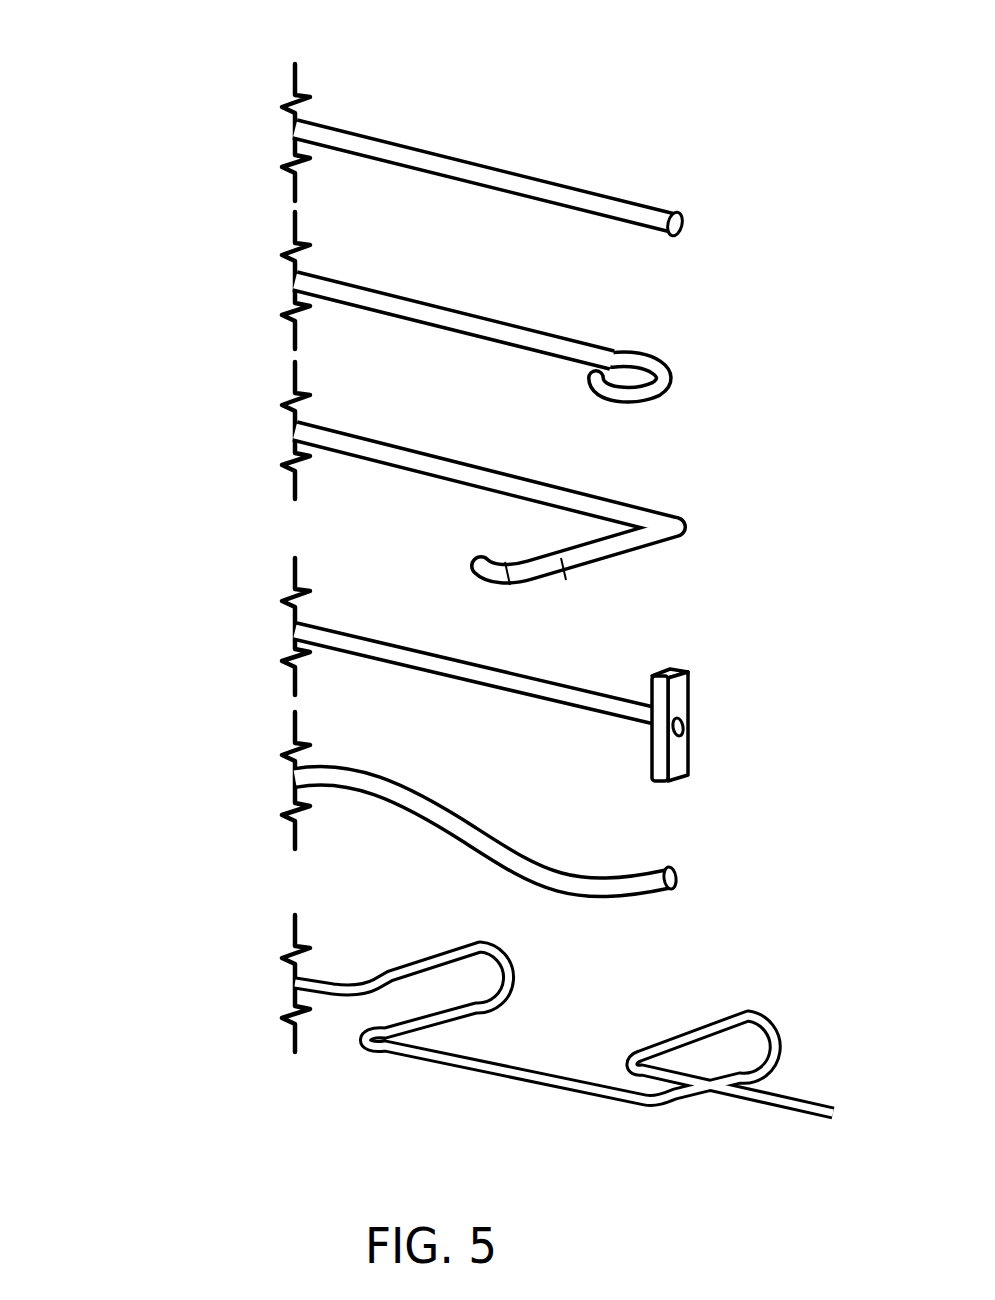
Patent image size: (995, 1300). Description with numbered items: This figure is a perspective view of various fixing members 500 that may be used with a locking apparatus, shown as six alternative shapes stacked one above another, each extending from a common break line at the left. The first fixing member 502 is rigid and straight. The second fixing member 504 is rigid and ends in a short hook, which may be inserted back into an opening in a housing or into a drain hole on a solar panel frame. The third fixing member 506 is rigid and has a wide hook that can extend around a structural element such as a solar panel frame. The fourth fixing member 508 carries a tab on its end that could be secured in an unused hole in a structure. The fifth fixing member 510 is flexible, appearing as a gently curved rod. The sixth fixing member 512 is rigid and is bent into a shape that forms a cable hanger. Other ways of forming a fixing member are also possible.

The fixing members 500 is at (130, 66).
The first fixing member 502 is at (580, 187).
The second fixing member 504 is at (617, 357).
The third fixing member 506 is at (647, 542).
The fourth fixing member 508 is at (673, 692).
The fifth fixing member 510 is at (678, 872).
The sixth fixing member 512 is at (760, 1017).